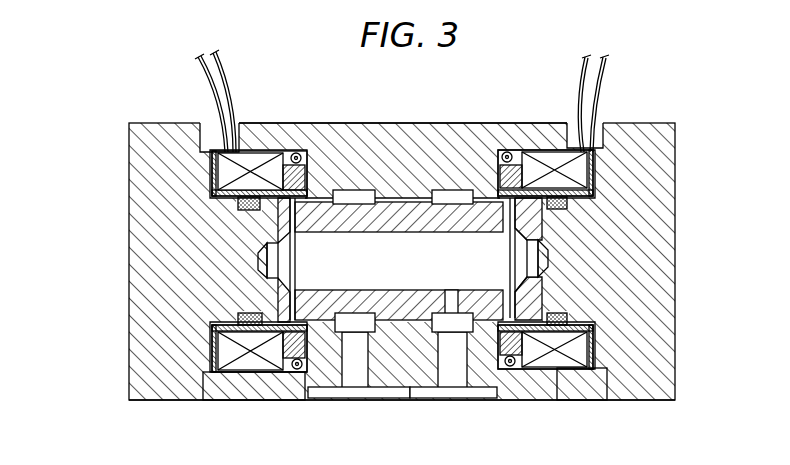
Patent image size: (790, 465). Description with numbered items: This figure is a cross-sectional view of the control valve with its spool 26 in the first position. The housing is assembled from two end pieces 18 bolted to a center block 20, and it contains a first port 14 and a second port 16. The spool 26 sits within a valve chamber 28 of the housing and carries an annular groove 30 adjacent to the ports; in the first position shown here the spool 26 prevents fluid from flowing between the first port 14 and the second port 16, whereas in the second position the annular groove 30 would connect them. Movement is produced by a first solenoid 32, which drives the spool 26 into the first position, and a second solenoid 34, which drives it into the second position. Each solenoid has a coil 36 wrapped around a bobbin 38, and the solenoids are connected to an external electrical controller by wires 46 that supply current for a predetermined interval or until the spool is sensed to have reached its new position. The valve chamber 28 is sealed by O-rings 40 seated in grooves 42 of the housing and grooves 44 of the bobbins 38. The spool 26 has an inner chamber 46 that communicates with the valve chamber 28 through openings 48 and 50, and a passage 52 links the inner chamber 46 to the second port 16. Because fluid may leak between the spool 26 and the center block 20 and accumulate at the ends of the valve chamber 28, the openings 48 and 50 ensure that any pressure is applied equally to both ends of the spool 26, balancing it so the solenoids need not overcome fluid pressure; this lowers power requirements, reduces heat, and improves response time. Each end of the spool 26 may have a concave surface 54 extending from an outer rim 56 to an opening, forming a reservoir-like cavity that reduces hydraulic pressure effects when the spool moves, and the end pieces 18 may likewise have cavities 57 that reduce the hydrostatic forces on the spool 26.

The first port 14 is at (340, 400).
The second port 16 is at (463, 396).
The end pieces 18 is at (128, 245).
The center block 20 is at (500, 123).
The spool 26 is at (288, 297).
The valve chamber 28 is at (560, 306).
The annular groove 30 is at (407, 313).
The first solenoid 32 is at (213, 178).
The second solenoid 34 is at (599, 175).
The coil 36 is at (559, 368).
The bobbin 38 is at (567, 303).
The O-rings 40 is at (262, 378).
The grooves 42 is at (212, 355).
The grooves 44 is at (297, 378).
The inner chamber 46 is at (594, 93).
The opening 48 is at (548, 262).
The opening 50 is at (295, 267).
The passage 52 is at (448, 292).
The concave surface 54 is at (513, 232).
The outer rim 56 is at (515, 205).
The cavities 57 is at (267, 245).